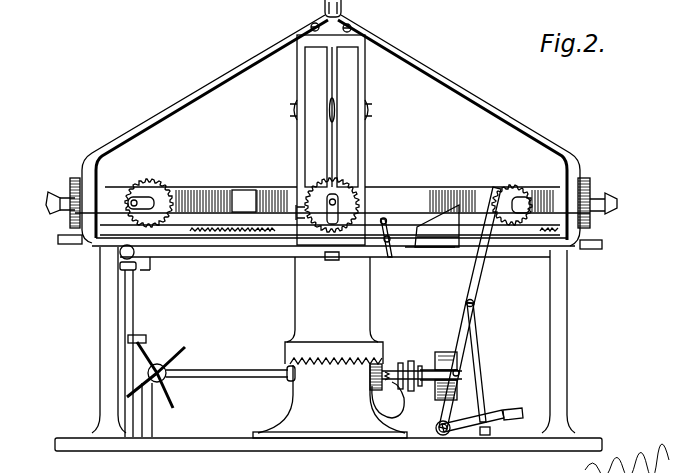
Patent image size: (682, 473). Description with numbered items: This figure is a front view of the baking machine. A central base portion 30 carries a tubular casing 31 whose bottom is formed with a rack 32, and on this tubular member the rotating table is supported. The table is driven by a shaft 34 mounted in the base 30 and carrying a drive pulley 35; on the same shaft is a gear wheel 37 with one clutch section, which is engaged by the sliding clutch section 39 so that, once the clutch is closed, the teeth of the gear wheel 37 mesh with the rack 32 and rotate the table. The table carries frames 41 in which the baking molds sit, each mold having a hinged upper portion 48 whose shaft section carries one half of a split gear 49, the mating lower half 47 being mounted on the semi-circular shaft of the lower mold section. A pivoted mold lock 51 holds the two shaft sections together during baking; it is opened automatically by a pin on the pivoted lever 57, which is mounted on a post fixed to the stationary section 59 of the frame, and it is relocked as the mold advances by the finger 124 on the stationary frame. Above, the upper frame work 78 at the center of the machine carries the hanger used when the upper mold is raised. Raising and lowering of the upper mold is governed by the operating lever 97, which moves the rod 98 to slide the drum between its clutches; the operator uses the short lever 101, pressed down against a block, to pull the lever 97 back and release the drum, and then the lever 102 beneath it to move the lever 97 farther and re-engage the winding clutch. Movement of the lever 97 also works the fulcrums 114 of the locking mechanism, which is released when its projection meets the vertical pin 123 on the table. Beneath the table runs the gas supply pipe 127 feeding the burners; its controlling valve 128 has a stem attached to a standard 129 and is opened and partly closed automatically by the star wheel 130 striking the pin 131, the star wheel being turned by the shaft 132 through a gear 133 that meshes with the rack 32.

The central base portion 30 is at (330, 401).
The tubular casing 31 is at (332, 297).
The rack 32 is at (378, 349).
The shaft 34 is at (411, 364).
The drive pulley 35 is at (444, 351).
The gear wheel 37 is at (377, 391).
The sliding clutch section 39 is at (393, 403).
The frames 41 is at (234, 188).
The lower half of split gear 47 is at (323, 216).
The upper hinged portion of mold 48 is at (340, 200).
The other half of split gear 49 is at (508, 195).
The mold lock 51 is at (618, 203).
The pivoted lever 57 is at (148, 188).
The stationary section of frame 59 is at (62, 241).
The upper frame work 78 is at (372, 112).
The operating lever 97 is at (486, 288).
The rod 98 is at (458, 373).
The short lever 101 is at (497, 412).
The lever 102 is at (522, 403).
The fulcrums 114 is at (424, 258).
The vertical pin 123 is at (468, 200).
The finger 124 is at (440, 210).
The gas supply pipe 127 is at (184, 250).
The controlling valve 128 is at (121, 258).
The standard 129 is at (134, 306).
The star wheel 130 is at (178, 352).
The pin 131 is at (145, 338).
The shaft 132 is at (232, 362).
The gear 133 is at (287, 381).